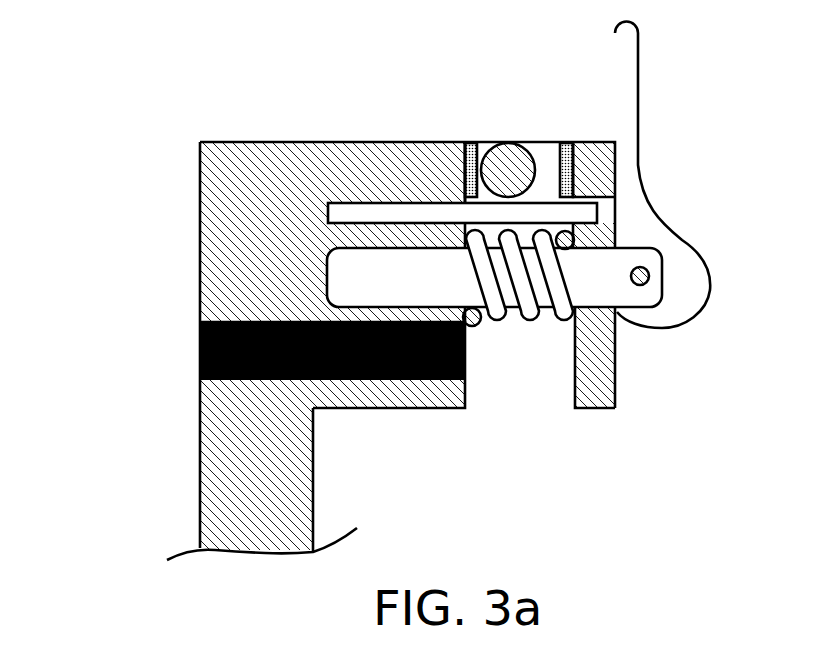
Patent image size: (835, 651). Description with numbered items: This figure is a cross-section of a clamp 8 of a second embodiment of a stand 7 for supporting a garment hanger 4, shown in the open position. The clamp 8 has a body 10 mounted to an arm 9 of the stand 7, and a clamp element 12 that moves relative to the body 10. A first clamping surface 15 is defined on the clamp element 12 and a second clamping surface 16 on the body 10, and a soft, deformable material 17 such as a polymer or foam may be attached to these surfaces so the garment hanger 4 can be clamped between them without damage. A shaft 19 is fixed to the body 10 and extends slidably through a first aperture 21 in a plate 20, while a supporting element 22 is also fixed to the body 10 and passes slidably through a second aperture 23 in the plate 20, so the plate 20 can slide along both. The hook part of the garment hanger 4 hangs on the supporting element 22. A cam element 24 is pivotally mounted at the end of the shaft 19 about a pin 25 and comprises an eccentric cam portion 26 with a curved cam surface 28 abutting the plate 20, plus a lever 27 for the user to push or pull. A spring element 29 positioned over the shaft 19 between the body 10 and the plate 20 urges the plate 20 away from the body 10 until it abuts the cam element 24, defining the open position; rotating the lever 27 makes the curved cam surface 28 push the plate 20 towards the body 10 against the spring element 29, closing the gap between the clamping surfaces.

The stand 7 is at (110, 112).
The clamp 8 is at (539, 450).
The arm 9 is at (210, 470).
The body 10 is at (222, 155).
The clamp element 12 is at (617, 397).
The first clamping surface 15 is at (568, 148).
The second clamping surface 16 is at (468, 148).
The material 17 is at (476, 148).
The shaft 19 is at (355, 308).
The plate 20 is at (595, 410).
The first aperture 21 is at (620, 322).
The supporting element 22 is at (352, 208).
The second aperture 23 is at (608, 203).
The cam element 24 is at (693, 202).
The pin 25 is at (648, 275).
The eccentric cam portion 26 is at (683, 308).
The lever 27 is at (630, 42).
The curved cam surface 28 is at (710, 290).
The spring element 29 is at (537, 320).
The garment hanger 4 is at (516, 150).